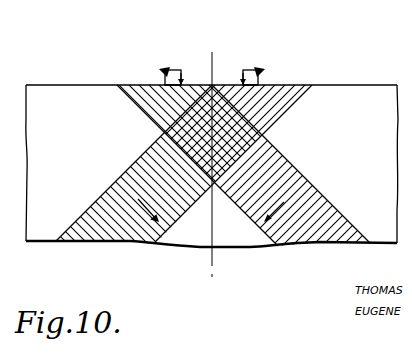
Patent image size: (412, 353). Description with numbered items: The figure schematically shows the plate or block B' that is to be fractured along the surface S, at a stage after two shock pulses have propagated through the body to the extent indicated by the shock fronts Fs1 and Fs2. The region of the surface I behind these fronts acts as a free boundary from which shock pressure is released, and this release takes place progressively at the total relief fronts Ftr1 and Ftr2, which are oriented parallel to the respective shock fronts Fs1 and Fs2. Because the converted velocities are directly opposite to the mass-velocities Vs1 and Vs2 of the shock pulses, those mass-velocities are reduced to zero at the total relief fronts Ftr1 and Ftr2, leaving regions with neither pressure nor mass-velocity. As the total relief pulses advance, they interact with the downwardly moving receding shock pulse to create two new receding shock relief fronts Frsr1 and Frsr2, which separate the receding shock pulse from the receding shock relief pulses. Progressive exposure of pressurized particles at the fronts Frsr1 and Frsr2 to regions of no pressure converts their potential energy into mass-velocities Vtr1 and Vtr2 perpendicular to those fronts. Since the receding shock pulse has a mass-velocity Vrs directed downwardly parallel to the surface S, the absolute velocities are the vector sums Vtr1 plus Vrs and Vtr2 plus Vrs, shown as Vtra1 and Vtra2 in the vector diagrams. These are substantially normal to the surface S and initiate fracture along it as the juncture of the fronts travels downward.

The surface I is at (43, 85).
The plate or block B' is at (211, 262).
The surface S is at (216, 262).
The mass-velocity (absolute) behind receding shock relief front Vtra1 is at (166, 68).
The mass-velocity (absolute) behind receding shock relief front Vtra2 is at (257, 69).
The mass-velocity in receding shock pulse Vrs is at (183, 73).
The mass-velocity behind receding shock relief front Vtr1 is at (160, 73).
The mass-velocity behind receding shock relief front Vtr2 is at (263, 74).
The receding shock relief front Frsr1 is at (181, 114).
The receding shock relief front Frsr2 is at (246, 118).
The total relief front Ftr1 is at (142, 153).
The total relief front Ftr2 is at (321, 196).
The mass-velocity behind shock front Vs1 is at (138, 199).
The mass-velocity behind shock front Vs2 is at (277, 202).
The shock front Fs1 is at (186, 208).
The shock front Fs2 is at (241, 208).